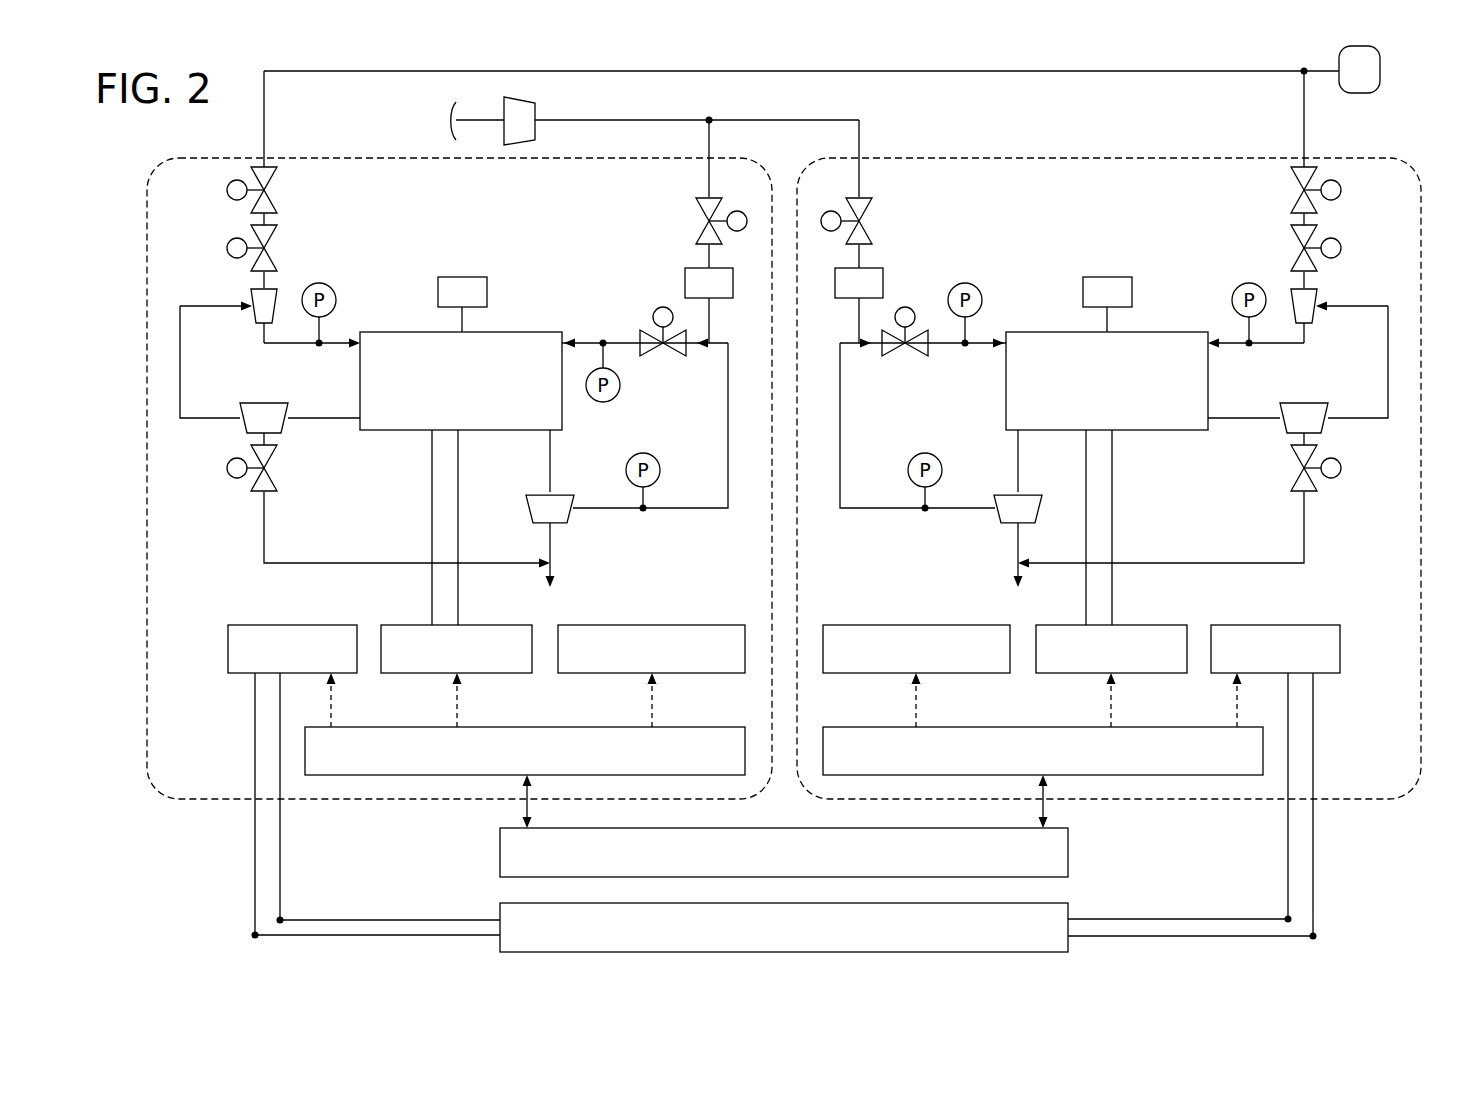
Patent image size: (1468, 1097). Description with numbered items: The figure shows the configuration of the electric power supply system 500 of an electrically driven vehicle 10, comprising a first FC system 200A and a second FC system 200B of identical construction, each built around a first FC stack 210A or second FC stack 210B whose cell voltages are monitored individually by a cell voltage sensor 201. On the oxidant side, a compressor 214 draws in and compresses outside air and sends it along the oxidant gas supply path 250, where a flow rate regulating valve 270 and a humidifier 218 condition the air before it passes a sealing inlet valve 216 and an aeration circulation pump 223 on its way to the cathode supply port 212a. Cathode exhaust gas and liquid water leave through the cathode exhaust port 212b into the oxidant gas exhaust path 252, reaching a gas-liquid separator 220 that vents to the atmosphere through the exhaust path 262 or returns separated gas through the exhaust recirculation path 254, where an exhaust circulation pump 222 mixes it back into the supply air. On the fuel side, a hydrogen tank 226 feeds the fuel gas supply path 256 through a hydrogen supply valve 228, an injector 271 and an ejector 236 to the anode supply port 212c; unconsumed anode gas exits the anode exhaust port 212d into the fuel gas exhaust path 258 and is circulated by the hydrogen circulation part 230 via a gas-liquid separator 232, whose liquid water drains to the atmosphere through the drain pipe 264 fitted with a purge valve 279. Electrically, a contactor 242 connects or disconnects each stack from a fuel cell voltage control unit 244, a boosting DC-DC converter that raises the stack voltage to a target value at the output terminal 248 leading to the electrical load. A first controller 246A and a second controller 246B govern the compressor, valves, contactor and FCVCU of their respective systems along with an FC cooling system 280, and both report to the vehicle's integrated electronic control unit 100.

The electrically driven vehicle 10 is at (1068, 906).
The integrated electronic control unit 100 is at (1068, 855).
The first FC system 200A is at (375, 140).
The second FC system 200B is at (1102, 157).
The cell voltage sensor 201 is at (462, 277).
The first FC stack 210A is at (480, 332).
The second FC stack 210B is at (1130, 332).
The cathode supply port 212a is at (565, 340).
The cathode exhaust port 212b is at (548, 435).
The anode supply port 212c is at (358, 340).
The anode exhaust port 212d is at (357, 415).
The compressor 214 is at (538, 108).
The sealing inlet valve 216 is at (668, 358).
The humidifier 218 is at (688, 272).
The gas-liquid separator 220 is at (573, 515).
The exhaust circulation pump 222 is at (648, 452).
The aeration circulation pump 223 is at (603, 402).
The hydrogen tank 226 is at (1358, 95).
The hydrogen supply valve 228 is at (227, 190).
The hydrogen circulation part 230 is at (319, 283).
The gas-liquid separator 232 is at (263, 403).
The ejector 236 is at (251, 294).
The contactor 242 is at (460, 622).
The fuel cell voltage control unit 244 is at (294, 625).
The first controller 246A is at (674, 727).
The second controller 246B is at (1142, 727).
The output terminal 248 is at (252, 937).
The oxidant gas supply path 250 is at (622, 120).
The oxidant gas exhaust path 252 is at (552, 462).
The exhaust recirculation path 254 is at (700, 510).
The fuel gas supply path 256 is at (963, 73).
The fuel gas exhaust path 258 is at (310, 420).
The exhaust path 262 is at (553, 548).
The drain pipe 264 is at (272, 566).
The flow rate regulating valve 270 is at (700, 221).
The injector 271 is at (227, 248).
The purge valve 279 is at (235, 462).
The FC cooling system 280 is at (680, 625).
The electric power supply system 500 is at (1406, 127).